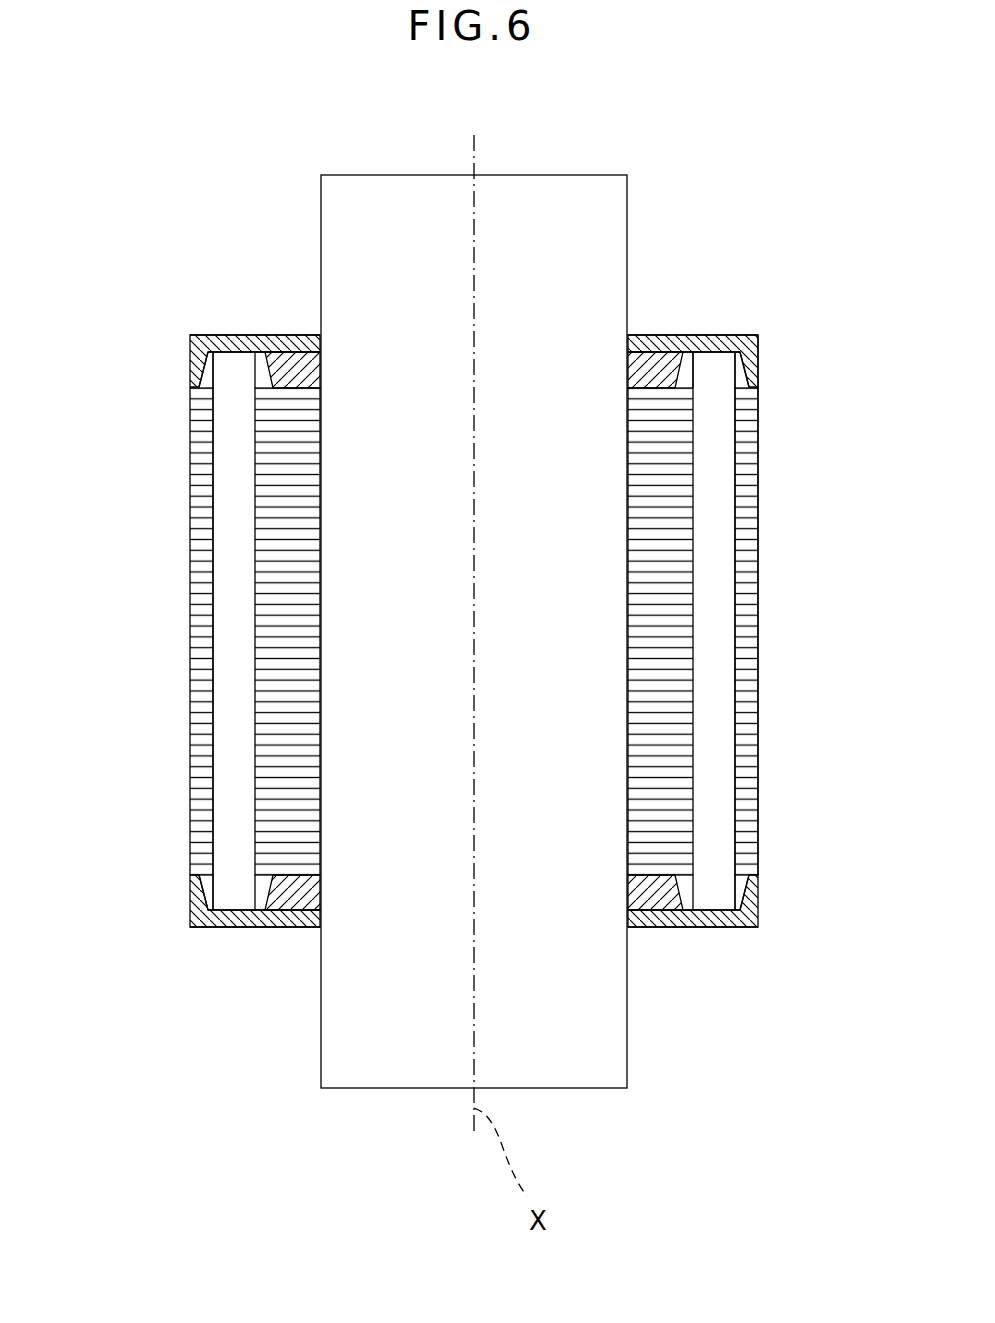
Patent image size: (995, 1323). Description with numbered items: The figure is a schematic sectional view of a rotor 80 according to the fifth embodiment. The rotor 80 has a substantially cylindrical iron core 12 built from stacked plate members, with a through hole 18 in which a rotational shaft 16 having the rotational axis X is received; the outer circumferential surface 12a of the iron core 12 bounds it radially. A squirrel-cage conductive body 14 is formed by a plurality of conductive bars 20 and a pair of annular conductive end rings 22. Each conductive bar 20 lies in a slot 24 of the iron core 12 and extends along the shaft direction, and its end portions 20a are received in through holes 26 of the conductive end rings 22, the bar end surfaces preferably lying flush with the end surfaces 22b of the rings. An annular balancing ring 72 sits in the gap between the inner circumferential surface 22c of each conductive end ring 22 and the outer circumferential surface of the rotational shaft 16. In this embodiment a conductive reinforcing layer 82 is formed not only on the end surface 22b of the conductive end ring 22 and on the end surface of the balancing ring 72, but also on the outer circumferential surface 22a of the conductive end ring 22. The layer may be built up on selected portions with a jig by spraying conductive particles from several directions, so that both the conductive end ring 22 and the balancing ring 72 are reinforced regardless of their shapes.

The iron core 12 is at (270, 562).
The outer circumferential surface of the iron core 12a is at (758, 660).
The squirrel-cage conductive body 14 is at (754, 732).
The rotational shaft 16 is at (544, 245).
The through hole 18 is at (628, 518).
The conductive bar 20 is at (242, 672).
The end portion of the conductive bar 20a is at (223, 412).
The conductive end ring 22 is at (203, 335).
The outer circumferential surface of the conductive end ring 22a is at (203, 372).
The end surface of the conductive end ring 22b is at (243, 335).
The inner circumferential surface of the conductive end ring 22c is at (278, 372).
The slot 24 is at (213, 731).
The through hole of the conductive end ring 26 is at (213, 381).
The balancing ring 72 is at (305, 352).
The rotor 80 is at (696, 237).
The conductive reinforcing layer 82 is at (220, 335).